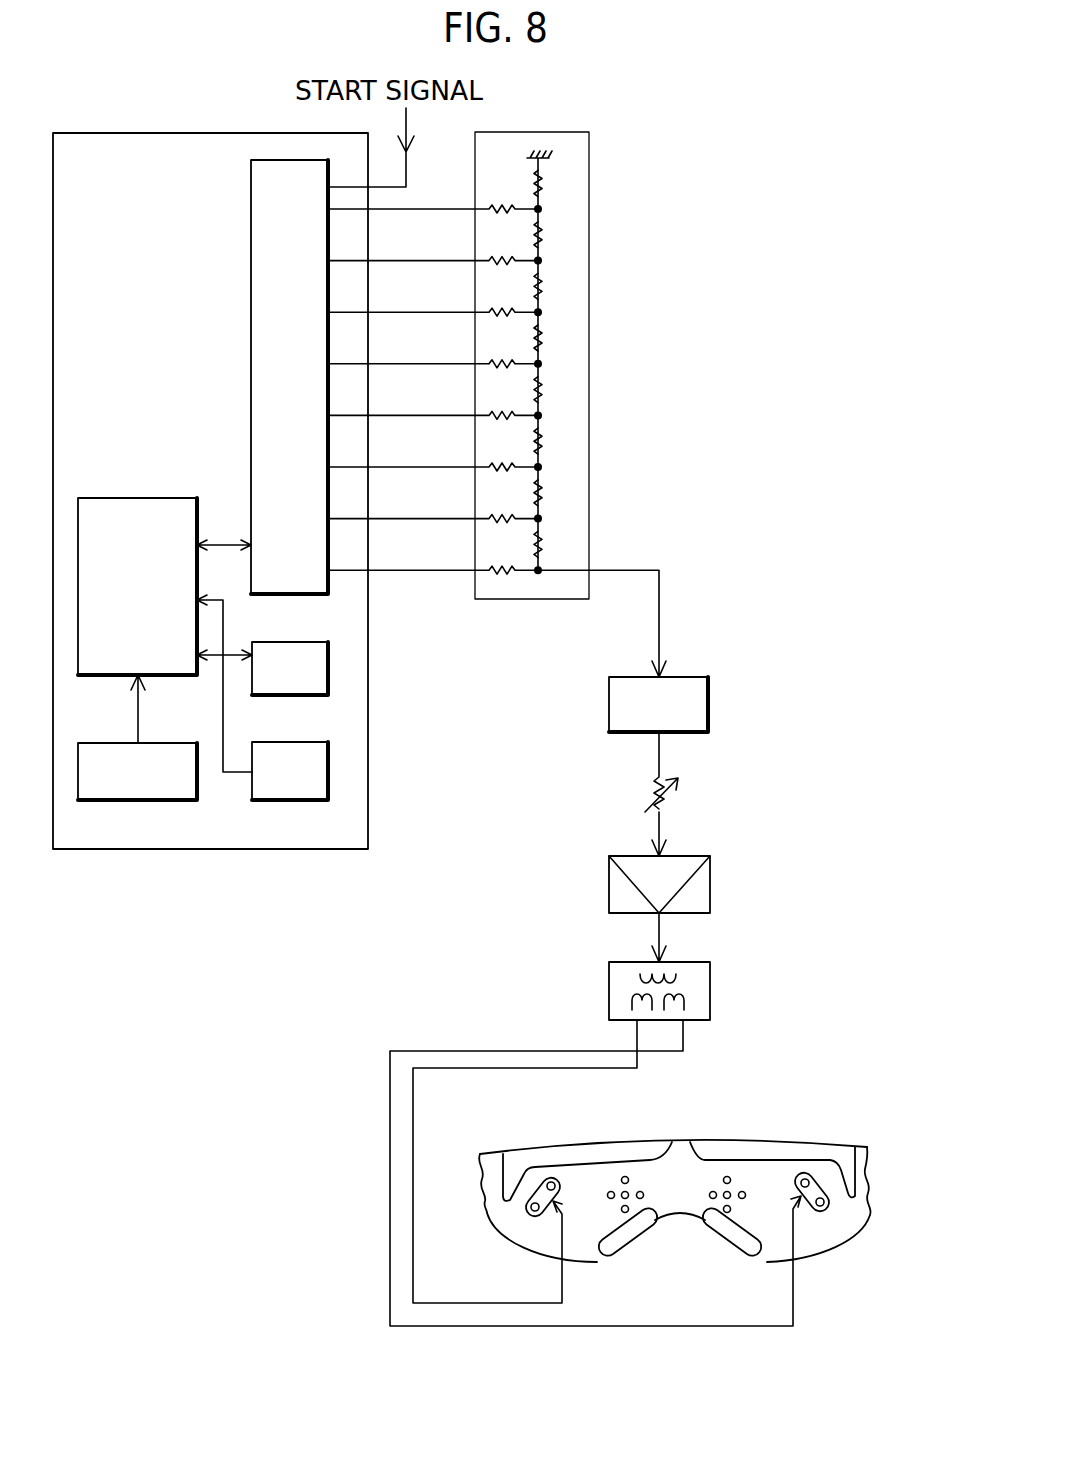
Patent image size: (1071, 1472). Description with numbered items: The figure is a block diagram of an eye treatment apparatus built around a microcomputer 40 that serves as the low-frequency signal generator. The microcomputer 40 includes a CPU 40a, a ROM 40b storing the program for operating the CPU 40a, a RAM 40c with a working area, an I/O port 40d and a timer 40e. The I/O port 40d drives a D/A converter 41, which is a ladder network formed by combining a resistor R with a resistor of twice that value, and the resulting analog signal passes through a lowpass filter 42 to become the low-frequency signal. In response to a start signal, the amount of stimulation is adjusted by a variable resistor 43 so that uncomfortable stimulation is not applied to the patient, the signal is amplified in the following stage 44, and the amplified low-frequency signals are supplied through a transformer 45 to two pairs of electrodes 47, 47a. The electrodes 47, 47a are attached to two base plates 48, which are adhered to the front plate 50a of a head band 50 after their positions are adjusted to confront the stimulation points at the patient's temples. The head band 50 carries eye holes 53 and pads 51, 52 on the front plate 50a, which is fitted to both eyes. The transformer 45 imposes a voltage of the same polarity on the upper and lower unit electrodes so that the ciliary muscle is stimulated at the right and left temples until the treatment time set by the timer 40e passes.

The microcomputer 40 is at (225, 849).
The CPU 40a is at (132, 497).
The ROM 40b is at (300, 800).
The RAM 40c is at (288, 642).
The I/O port 40d is at (251, 292).
The timer 40e is at (168, 800).
The D/A converter 41 is at (590, 242).
The lowpass filter 42 is at (708, 700).
The variable resistor 43 is at (684, 787).
The amplifier 44 is at (710, 897).
The transformer 45 is at (710, 995).
The electrodes 47 is at (524, 1222).
The electrodes 47a is at (815, 1211).
The base plates 48 is at (527, 1187).
The head band 50 is at (713, 1138).
The front plate 50a is at (733, 1167).
The pad 51 is at (573, 1150).
The pads 52 is at (654, 1225).
The eye holes 53 is at (627, 1176).